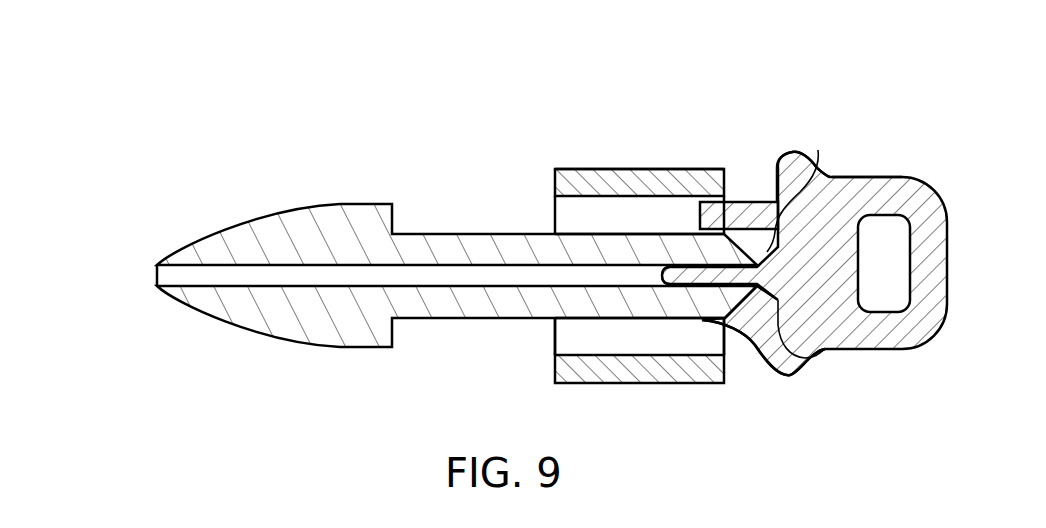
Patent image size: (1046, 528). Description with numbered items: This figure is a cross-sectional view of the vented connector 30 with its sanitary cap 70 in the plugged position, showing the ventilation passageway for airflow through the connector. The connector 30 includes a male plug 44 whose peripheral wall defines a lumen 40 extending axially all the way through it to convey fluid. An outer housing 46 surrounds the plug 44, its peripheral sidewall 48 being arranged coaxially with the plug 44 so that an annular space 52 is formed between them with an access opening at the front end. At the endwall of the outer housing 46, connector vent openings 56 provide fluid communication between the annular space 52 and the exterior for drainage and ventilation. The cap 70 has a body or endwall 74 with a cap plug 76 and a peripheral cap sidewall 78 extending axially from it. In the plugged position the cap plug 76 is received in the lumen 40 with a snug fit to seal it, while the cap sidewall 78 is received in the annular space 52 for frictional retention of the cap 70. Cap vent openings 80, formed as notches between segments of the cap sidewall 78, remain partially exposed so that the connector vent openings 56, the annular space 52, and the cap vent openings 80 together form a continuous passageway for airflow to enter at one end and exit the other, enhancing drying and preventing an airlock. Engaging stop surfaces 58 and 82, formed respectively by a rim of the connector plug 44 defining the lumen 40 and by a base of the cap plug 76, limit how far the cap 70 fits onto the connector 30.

The vented connector 30 is at (220, 366).
The lumen 40 is at (150, 276).
The male plug 44 is at (621, 222).
The outer housing 46 is at (640, 158).
The peripheral sidewall 48 is at (670, 169).
The annular space 52 is at (626, 330).
The connector vent openings 56 is at (554, 337).
The connector stop surface 58 is at (818, 357).
The sanitary cap 70 is at (906, 388).
The cap body or endwall 74 is at (872, 167).
The cap plug 76 is at (643, 272).
The cap sidewall 78 is at (747, 193).
The cap vent openings 80 is at (742, 359).
The cap stop surface 82 is at (818, 152).